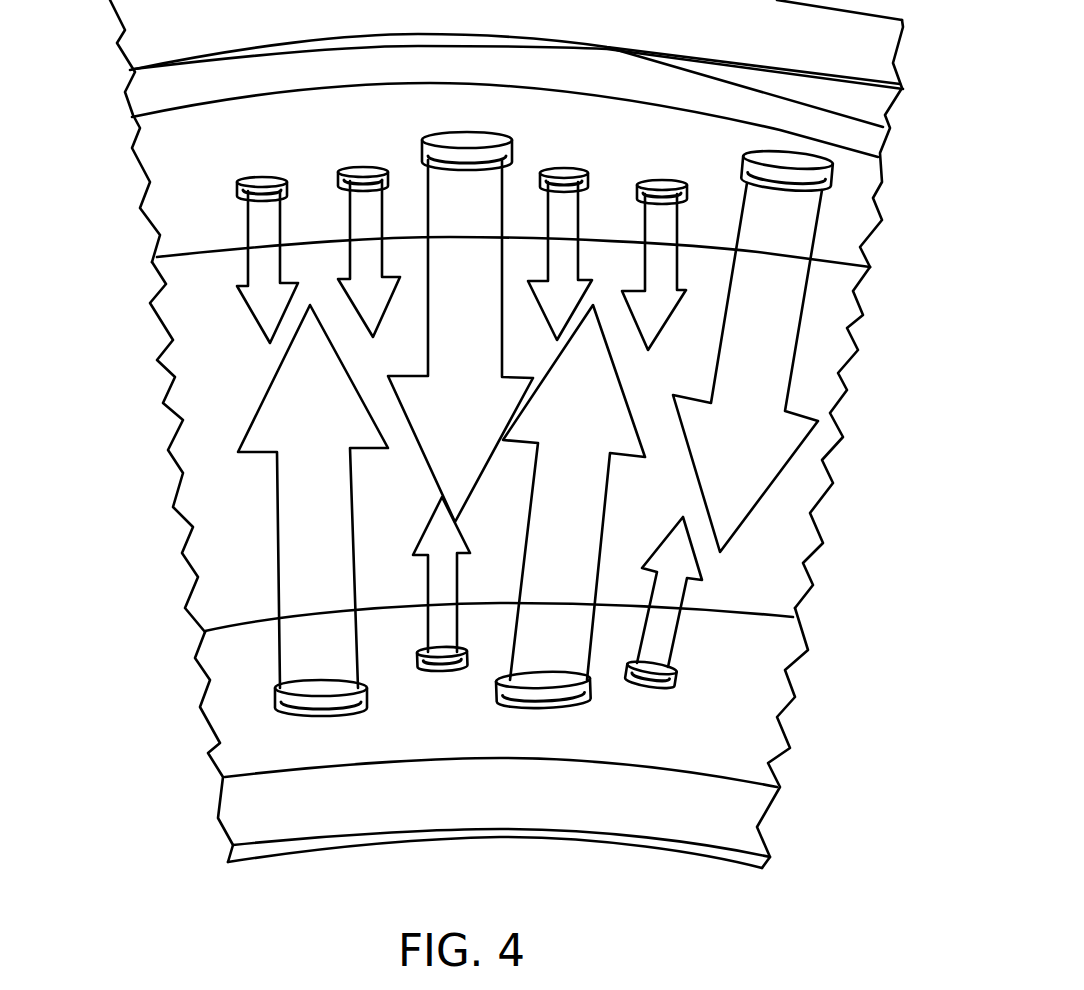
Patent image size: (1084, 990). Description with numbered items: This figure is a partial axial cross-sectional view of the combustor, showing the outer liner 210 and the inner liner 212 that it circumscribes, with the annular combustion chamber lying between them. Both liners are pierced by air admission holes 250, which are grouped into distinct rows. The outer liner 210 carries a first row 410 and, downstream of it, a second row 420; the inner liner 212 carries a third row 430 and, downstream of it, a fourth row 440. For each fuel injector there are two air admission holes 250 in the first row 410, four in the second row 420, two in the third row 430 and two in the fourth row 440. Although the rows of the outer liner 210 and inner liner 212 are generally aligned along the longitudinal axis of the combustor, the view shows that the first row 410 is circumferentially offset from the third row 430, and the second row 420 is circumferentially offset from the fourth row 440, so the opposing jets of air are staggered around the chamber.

The outer liner 210 is at (128, 92).
The inner liner 212 is at (222, 748).
The air admission holes 250 is at (302, 108).
The first row 410 is at (485, 135).
The second row 420 is at (250, 176).
The third row 430 is at (340, 708).
The fourth row 440 is at (445, 665).